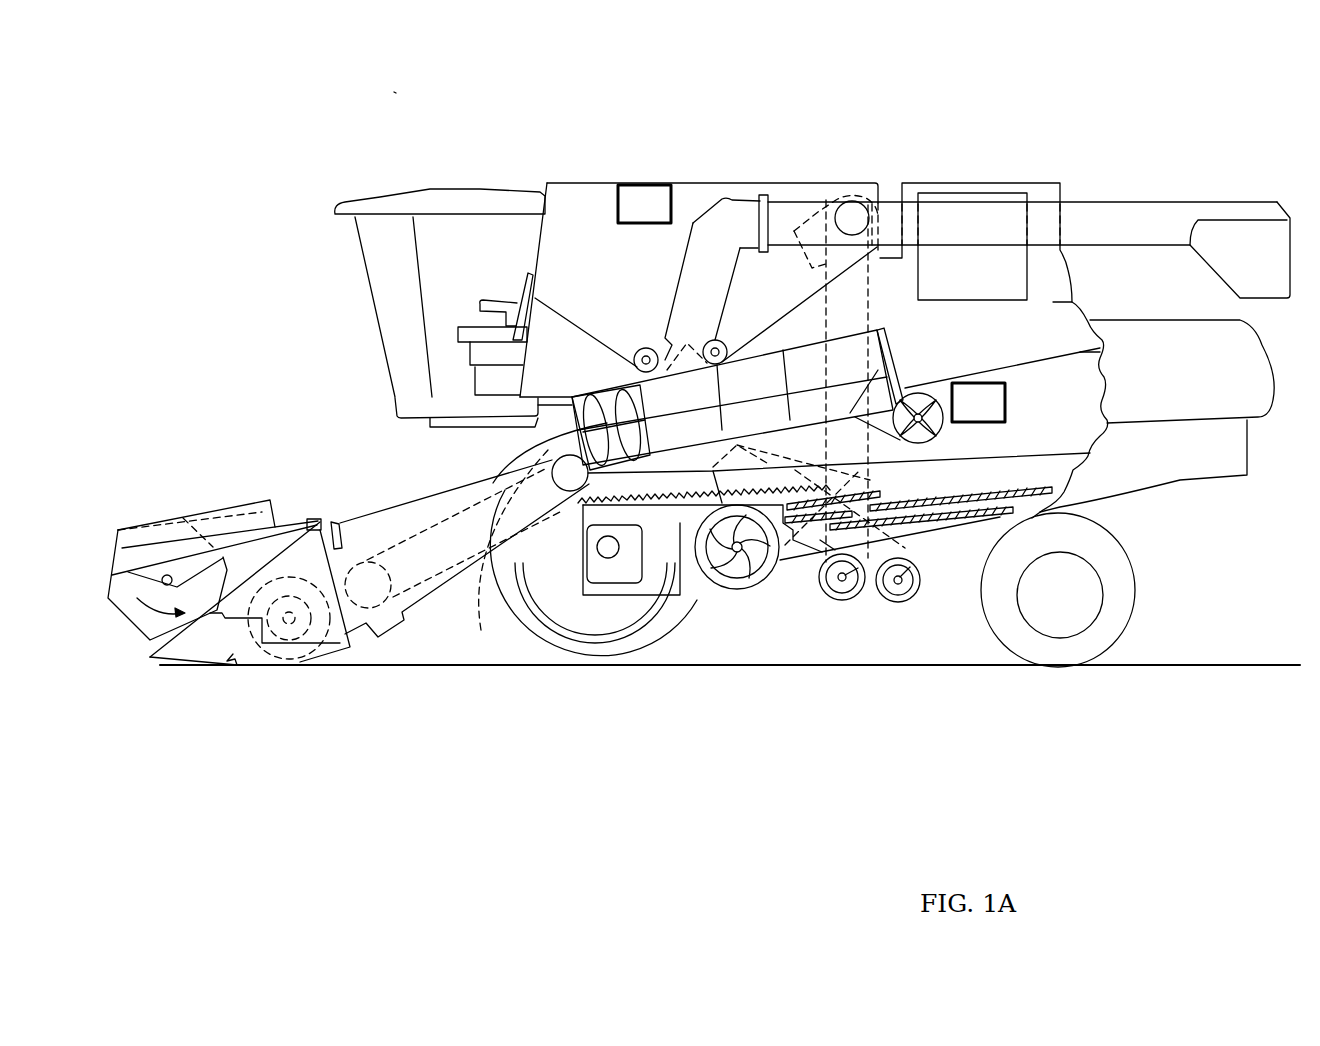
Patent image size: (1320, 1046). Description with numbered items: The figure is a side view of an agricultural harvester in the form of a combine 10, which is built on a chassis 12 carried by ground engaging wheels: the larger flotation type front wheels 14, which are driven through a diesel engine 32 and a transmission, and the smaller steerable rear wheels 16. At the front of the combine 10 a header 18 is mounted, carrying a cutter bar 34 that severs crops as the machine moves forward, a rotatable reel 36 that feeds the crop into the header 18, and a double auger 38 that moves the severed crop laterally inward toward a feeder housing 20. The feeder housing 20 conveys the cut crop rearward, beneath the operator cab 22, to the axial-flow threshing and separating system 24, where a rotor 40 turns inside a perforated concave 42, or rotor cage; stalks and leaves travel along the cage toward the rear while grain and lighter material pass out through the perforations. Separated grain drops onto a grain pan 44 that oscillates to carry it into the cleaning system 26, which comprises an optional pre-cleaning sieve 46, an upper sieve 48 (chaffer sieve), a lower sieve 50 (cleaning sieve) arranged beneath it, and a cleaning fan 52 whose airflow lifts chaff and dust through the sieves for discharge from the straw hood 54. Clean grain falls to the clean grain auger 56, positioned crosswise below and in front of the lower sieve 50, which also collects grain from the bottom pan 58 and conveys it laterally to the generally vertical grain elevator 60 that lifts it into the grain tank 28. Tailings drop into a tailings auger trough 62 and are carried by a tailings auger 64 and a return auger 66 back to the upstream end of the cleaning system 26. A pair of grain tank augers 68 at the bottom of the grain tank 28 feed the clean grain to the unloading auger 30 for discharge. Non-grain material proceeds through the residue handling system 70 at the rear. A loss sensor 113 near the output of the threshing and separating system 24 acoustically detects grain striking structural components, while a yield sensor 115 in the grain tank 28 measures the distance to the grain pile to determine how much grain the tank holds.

The combine 10 is at (428, 162).
The chassis 12 is at (1072, 504).
The front wheels 14 is at (516, 627).
The rear wheels 16 is at (1135, 610).
The header 18 is at (200, 490).
The feeder housing 20 is at (408, 500).
The operator cab 22 is at (362, 283).
The threshing and separating system 24 is at (505, 444).
The cleaning system 26 is at (786, 616).
The grain tank 28 is at (600, 185).
The unloading auger 30 is at (1150, 210).
The diesel engine 32 is at (962, 195).
The cutter bar 34 is at (223, 672).
The rotatable reel 36 is at (112, 576).
The double auger 38 is at (291, 642).
The rotor 40 is at (588, 392).
The perforated concave 42 is at (778, 375).
The grain pan 44 is at (577, 520).
The pre-cleaning sieve 46 is at (878, 497).
The upper sieve 48 is at (972, 500).
The lower sieve 50 is at (945, 527).
The cleaning fan 52 is at (740, 590).
The straw hood 54 is at (1258, 360).
The clean grain auger 56 is at (845, 600).
The bottom pan 58 is at (993, 527).
The grain elevator 60 is at (870, 305).
The tailings auger trough 62 is at (973, 533).
The tailings auger 64 is at (898, 602).
The return auger 66 is at (808, 472).
The grain tank augers 68 is at (642, 348).
The residue handling system 70 is at (1226, 497).
The loss sensor 113 is at (986, 383).
The yield sensor 115 is at (652, 196).